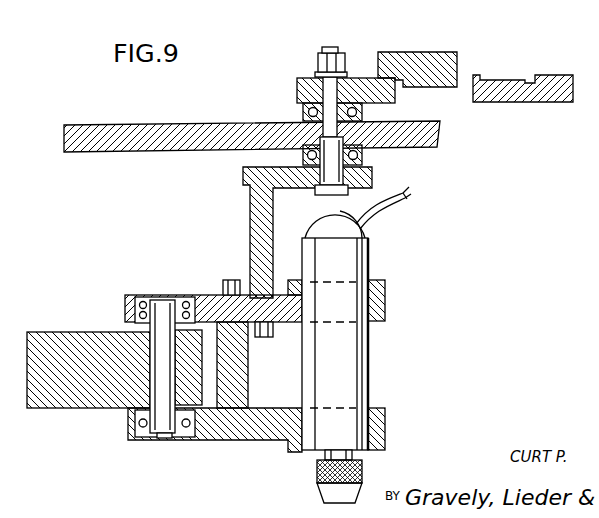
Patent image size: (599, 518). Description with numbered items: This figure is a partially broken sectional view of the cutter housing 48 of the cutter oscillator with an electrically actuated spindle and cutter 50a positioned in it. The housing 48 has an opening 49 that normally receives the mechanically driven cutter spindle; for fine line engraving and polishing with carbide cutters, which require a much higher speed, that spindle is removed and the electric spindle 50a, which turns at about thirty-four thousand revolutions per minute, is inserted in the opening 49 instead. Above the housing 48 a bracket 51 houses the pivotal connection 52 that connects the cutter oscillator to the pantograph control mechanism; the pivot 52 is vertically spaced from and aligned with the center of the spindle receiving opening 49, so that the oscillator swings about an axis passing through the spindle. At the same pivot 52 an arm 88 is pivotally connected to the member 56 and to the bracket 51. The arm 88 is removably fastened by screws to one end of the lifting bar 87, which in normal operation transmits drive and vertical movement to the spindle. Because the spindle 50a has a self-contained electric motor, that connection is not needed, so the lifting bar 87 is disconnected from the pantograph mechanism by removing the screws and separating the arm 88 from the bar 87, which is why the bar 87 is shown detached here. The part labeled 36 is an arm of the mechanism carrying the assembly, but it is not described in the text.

The arm 36 is at (91, 313).
The cutter housing 48 is at (277, 430).
The opening 49 is at (362, 416).
The electrically actuated spindle and cutter 50a is at (443, 239).
The bracket 51 is at (250, 221).
The pivotal connection 52 is at (330, 92).
The member 56 is at (236, 124).
The lifting bar 87 is at (546, 98).
The arm 88 is at (386, 52).